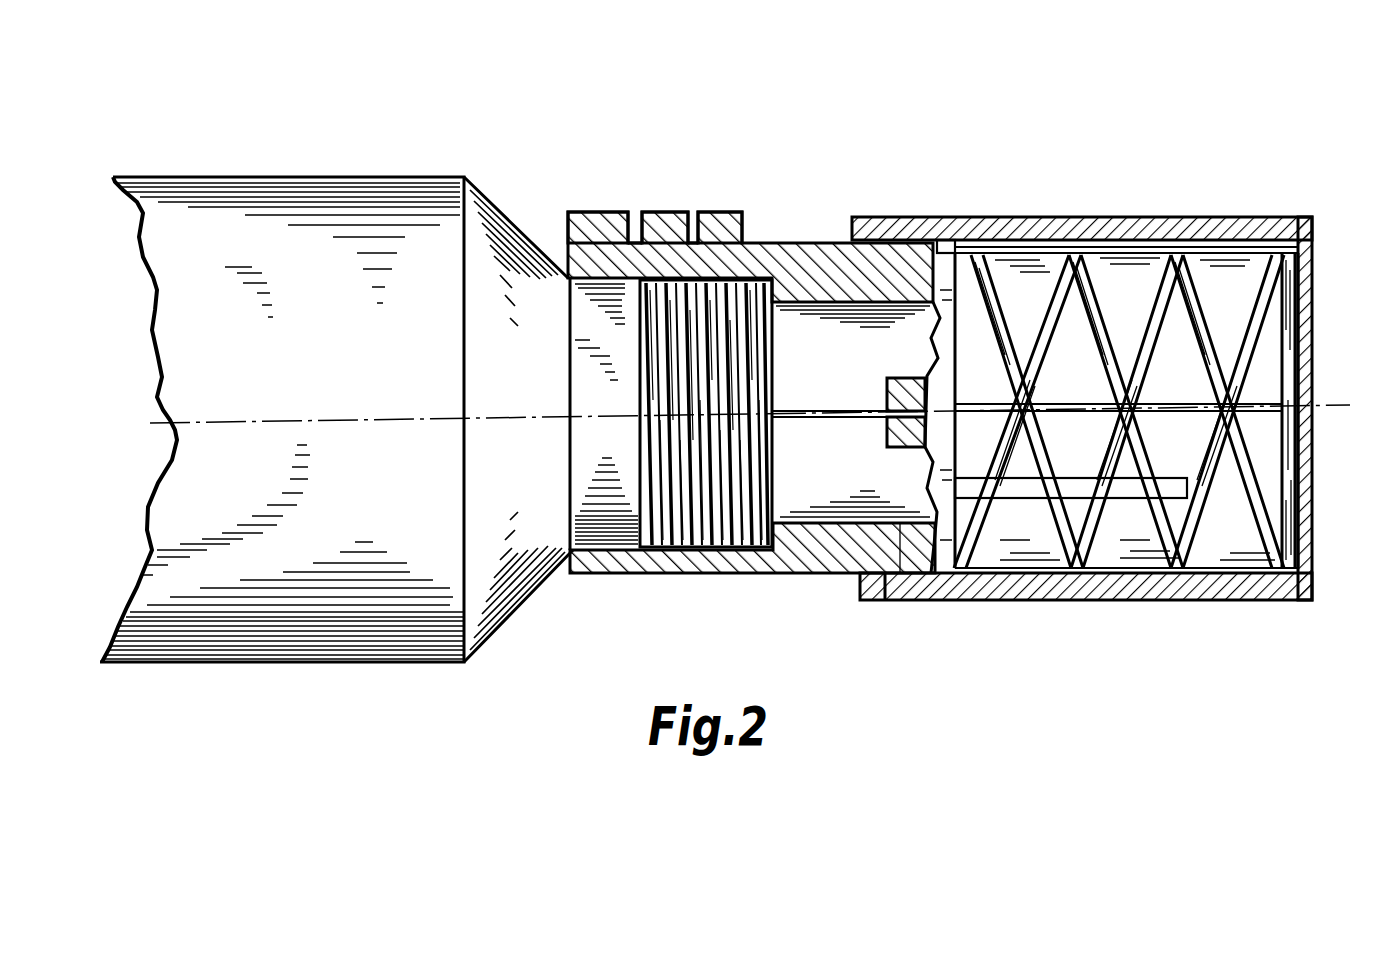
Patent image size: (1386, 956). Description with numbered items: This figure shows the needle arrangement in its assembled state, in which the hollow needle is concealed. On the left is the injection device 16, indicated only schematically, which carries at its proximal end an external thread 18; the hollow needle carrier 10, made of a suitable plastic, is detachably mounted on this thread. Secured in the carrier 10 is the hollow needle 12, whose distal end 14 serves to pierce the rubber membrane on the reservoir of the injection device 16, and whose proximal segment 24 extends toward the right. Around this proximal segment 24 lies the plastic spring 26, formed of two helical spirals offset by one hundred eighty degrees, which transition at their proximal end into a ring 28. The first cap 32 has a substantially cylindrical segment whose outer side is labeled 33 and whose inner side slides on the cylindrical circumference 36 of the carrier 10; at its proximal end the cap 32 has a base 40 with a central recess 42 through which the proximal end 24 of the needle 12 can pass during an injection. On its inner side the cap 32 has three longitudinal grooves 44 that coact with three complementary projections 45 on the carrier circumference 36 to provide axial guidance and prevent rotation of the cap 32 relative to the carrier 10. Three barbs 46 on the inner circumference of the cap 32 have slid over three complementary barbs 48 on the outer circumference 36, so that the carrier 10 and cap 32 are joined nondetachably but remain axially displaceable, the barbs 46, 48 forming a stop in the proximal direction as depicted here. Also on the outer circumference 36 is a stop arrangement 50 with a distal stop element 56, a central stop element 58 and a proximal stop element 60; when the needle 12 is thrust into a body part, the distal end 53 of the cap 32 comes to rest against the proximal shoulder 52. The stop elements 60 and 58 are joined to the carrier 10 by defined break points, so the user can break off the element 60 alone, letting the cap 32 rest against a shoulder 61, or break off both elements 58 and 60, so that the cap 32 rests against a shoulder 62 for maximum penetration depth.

The hollow needle carrier 10 is at (782, 331).
The hollow needle 12 is at (866, 396).
The distal end of hollow needle 14 is at (816, 425).
The injection device 16 is at (374, 148).
The external thread 18 is at (762, 372).
The proximal segment of hollow needle 24 is at (1182, 401).
The plastic spring 26 is at (1155, 573).
The ring 28 is at (1283, 293).
The first cap 32 is at (1116, 396).
The cylindrical outer side 33 is at (1235, 601).
The circumference of hollow needle carrier 36 is at (808, 575).
The base 40 is at (1313, 275).
The recess 42 is at (1313, 363).
The longitudinal grooves 44 is at (1080, 478).
The projections 45 is at (950, 247).
The barbs 46 is at (877, 601).
The barbs 48 is at (918, 522).
The stop arrangement 50 is at (560, 104).
The proximal shoulder 52 is at (748, 216).
The distal end of first cap 53 is at (853, 222).
The distal stop element 56 is at (582, 212).
The central stop element 58 is at (662, 212).
The proximal stop element 60 is at (720, 212).
The shoulder 61 is at (692, 241).
The shoulder 62 is at (634, 241).